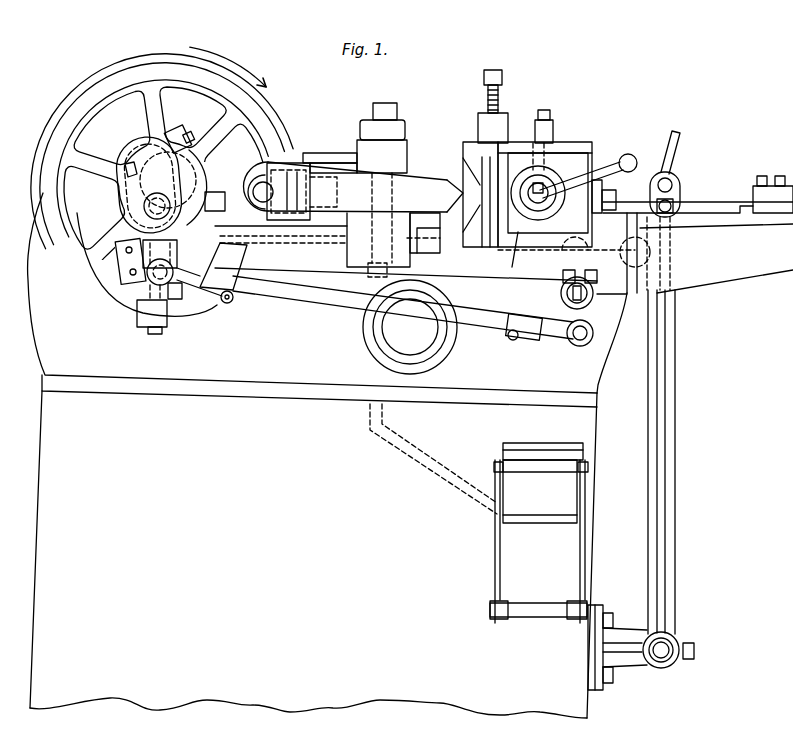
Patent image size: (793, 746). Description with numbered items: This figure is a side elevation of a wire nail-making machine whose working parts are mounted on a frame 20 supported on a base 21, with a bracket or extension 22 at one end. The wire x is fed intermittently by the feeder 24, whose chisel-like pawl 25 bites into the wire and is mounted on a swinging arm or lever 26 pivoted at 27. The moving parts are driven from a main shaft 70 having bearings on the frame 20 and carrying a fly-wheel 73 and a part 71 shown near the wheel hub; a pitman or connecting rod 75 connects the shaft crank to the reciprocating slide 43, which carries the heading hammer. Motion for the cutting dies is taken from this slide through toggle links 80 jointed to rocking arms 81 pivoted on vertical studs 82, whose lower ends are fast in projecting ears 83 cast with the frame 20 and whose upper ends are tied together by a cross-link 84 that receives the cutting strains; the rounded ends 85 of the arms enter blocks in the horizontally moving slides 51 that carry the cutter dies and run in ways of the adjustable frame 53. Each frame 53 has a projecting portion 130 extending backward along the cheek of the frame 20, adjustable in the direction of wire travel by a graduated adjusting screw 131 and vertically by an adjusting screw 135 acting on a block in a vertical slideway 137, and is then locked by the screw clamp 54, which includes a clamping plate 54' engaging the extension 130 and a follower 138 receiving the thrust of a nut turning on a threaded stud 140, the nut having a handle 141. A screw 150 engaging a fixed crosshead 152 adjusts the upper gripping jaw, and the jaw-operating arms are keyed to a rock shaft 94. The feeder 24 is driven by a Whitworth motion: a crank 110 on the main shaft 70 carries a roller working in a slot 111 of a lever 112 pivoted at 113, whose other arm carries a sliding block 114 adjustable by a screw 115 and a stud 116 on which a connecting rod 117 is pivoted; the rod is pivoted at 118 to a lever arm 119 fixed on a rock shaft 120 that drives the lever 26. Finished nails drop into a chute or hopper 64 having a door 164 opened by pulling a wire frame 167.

The fly-wheel 73 is at (162, 168).
The crank pin block 71 is at (174, 132).
The main shaft 70 is at (120, 184).
The slot 111 is at (127, 167).
The crank 110 is at (144, 206).
The lever 112 is at (128, 236).
The pivot 113 is at (172, 252).
The sliding block 114 is at (140, 292).
The screw 115 is at (170, 318).
The stud 116 is at (202, 296).
The connecting rod 117 is at (290, 302).
The frame 20 is at (327, 300).
The base 21 is at (313, 554).
The rock shaft 94 is at (410, 327).
The pitman or connecting rod 75 is at (231, 199).
The lever arm 119 is at (588, 320).
The toggle links 80 is at (260, 188).
The rocking arms 81 is at (314, 191).
The reciprocating slide 43 is at (340, 158).
The cross-link 84 is at (402, 153).
The vertical studs 82 is at (387, 135).
The projecting ears 83 is at (355, 252).
The rounded ends 85 is at (453, 186).
The slides 51 is at (465, 160).
The adjustable frame 53 is at (472, 242).
The projecting portions 130 is at (590, 152).
The threaded stud 140 is at (535, 189).
The follower 138 is at (559, 207).
The handle 141 is at (615, 187).
The fixed crosshead 152 is at (497, 125).
The screw 150 is at (485, 92).
The adjusting screws 135 is at (555, 100).
The clamping plate 54' is at (582, 118).
The screw clamps 54 is at (577, 143).
The adjusting screws 131 is at (621, 236).
The vertical slideway 137 is at (517, 254).
The rock shaft 120 is at (568, 293).
The pivot 118 is at (572, 344).
The feeder 24 is at (690, 165).
The pawl 25 is at (680, 146).
The bracket or extension 22 is at (698, 247).
The wire x is at (743, 200).
The swinging arm or lever 26 is at (677, 425).
The pivot 27 is at (666, 657).
The chute or hopper 64 is at (433, 459).
The door 164 is at (541, 533).
The wire frame 167 is at (548, 590).